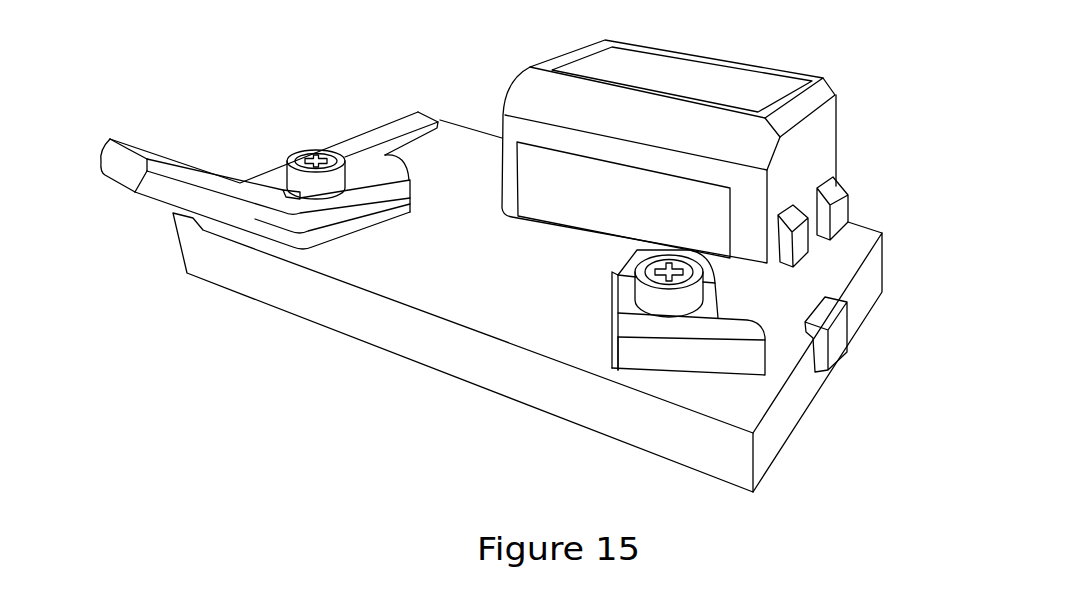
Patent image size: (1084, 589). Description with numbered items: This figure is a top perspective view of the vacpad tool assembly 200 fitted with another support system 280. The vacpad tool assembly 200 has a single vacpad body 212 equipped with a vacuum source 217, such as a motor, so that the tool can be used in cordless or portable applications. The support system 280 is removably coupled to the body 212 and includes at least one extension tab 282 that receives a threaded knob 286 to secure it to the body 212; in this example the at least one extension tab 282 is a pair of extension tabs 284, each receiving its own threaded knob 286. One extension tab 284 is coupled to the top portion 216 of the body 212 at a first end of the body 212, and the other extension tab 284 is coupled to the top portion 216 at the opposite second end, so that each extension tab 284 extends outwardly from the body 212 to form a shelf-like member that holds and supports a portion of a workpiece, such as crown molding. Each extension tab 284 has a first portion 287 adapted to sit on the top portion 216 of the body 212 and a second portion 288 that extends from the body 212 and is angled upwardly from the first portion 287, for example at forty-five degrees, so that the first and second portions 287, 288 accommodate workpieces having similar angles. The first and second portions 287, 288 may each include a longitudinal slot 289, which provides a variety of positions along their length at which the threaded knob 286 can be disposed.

The vacpad tool assembly 200 is at (276, 44).
The single vacpad body 212 is at (469, 122).
The top portion 216 is at (476, 300).
The vacuum source 217 is at (690, 77).
The support system 280 is at (227, 140).
The at least one extension tab 282 is at (721, 361).
The extension tab 284 is at (350, 205).
The threaded knob 286 is at (308, 149).
The first portion 287 is at (381, 188).
The second portion 288 is at (108, 180).
The slot 289 is at (293, 200).